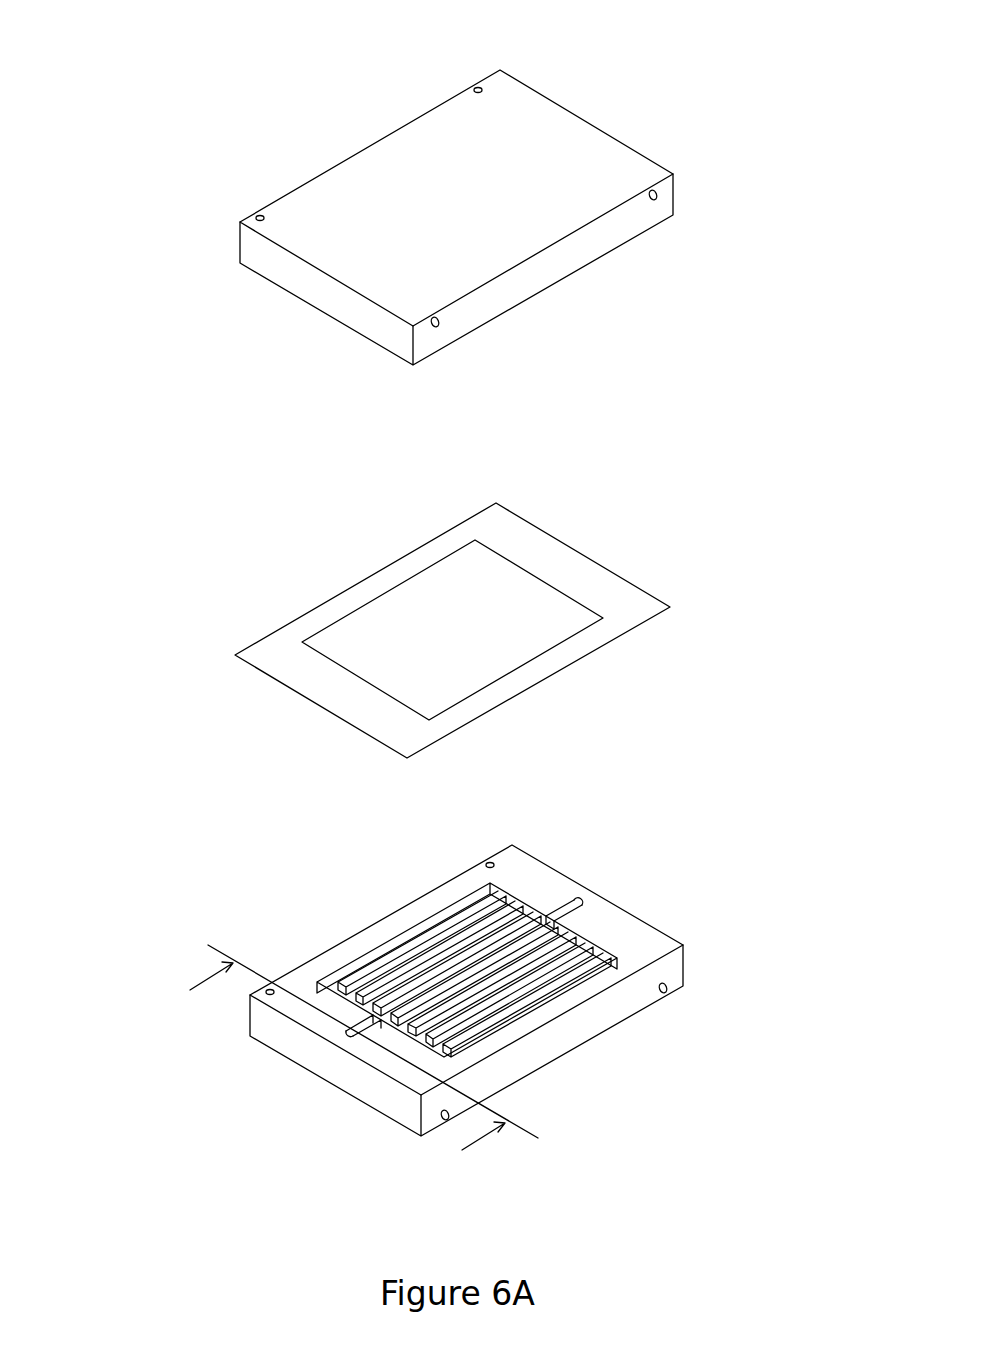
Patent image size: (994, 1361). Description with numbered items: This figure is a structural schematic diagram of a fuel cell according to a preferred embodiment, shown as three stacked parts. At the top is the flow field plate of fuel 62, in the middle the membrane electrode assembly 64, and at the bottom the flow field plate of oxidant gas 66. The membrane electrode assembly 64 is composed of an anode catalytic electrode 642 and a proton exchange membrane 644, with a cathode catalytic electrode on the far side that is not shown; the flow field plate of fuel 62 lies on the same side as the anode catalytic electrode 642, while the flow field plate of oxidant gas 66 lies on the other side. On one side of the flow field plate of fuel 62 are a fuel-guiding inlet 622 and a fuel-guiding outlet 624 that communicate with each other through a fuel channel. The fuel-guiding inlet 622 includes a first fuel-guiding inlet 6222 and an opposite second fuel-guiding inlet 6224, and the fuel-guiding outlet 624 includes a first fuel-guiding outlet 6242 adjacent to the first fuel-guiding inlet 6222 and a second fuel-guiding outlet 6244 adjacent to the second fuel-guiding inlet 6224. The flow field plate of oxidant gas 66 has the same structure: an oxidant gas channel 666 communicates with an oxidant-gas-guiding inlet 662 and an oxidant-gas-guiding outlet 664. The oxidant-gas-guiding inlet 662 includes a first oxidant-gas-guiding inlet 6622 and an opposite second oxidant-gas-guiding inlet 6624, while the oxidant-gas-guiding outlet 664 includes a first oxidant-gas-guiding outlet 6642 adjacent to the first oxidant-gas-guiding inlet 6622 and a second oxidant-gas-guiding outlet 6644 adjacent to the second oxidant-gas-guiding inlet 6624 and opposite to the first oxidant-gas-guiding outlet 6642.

The flow field plate of fuel 62 is at (477, 207).
The fuel-guiding inlet 622 is at (458, 172).
The first fuel-guiding inlet 6222 is at (478, 87).
The second fuel-guiding inlet 6224 is at (665, 193).
The fuel-guiding outlet 624 is at (478, 285).
The first fuel-guiding outlet 6242 is at (258, 215).
The second fuel-guiding outlet 6244 is at (445, 320).
The membrane electrode assembly 64 is at (396, 620).
The anode catalytic electrode 642 is at (278, 642).
The proton exchange membrane 644 is at (513, 653).
The flow field plate of oxidant gas 66 is at (436, 996).
The oxidant-gas-guiding inlet 662 is at (529, 951).
The first oxidant-gas-guiding inlet 6622 is at (490, 862).
The second oxidant-gas-guiding inlet 6624 is at (752, 1025).
The oxidant-gas-guiding outlet 664 is at (412, 1065).
The first oxidant-gas-guiding outlet 6642 is at (270, 989).
The second oxidant-gas-guiding outlet 6644 is at (438, 1108).
The oxidant gas channel 666 is at (510, 990).